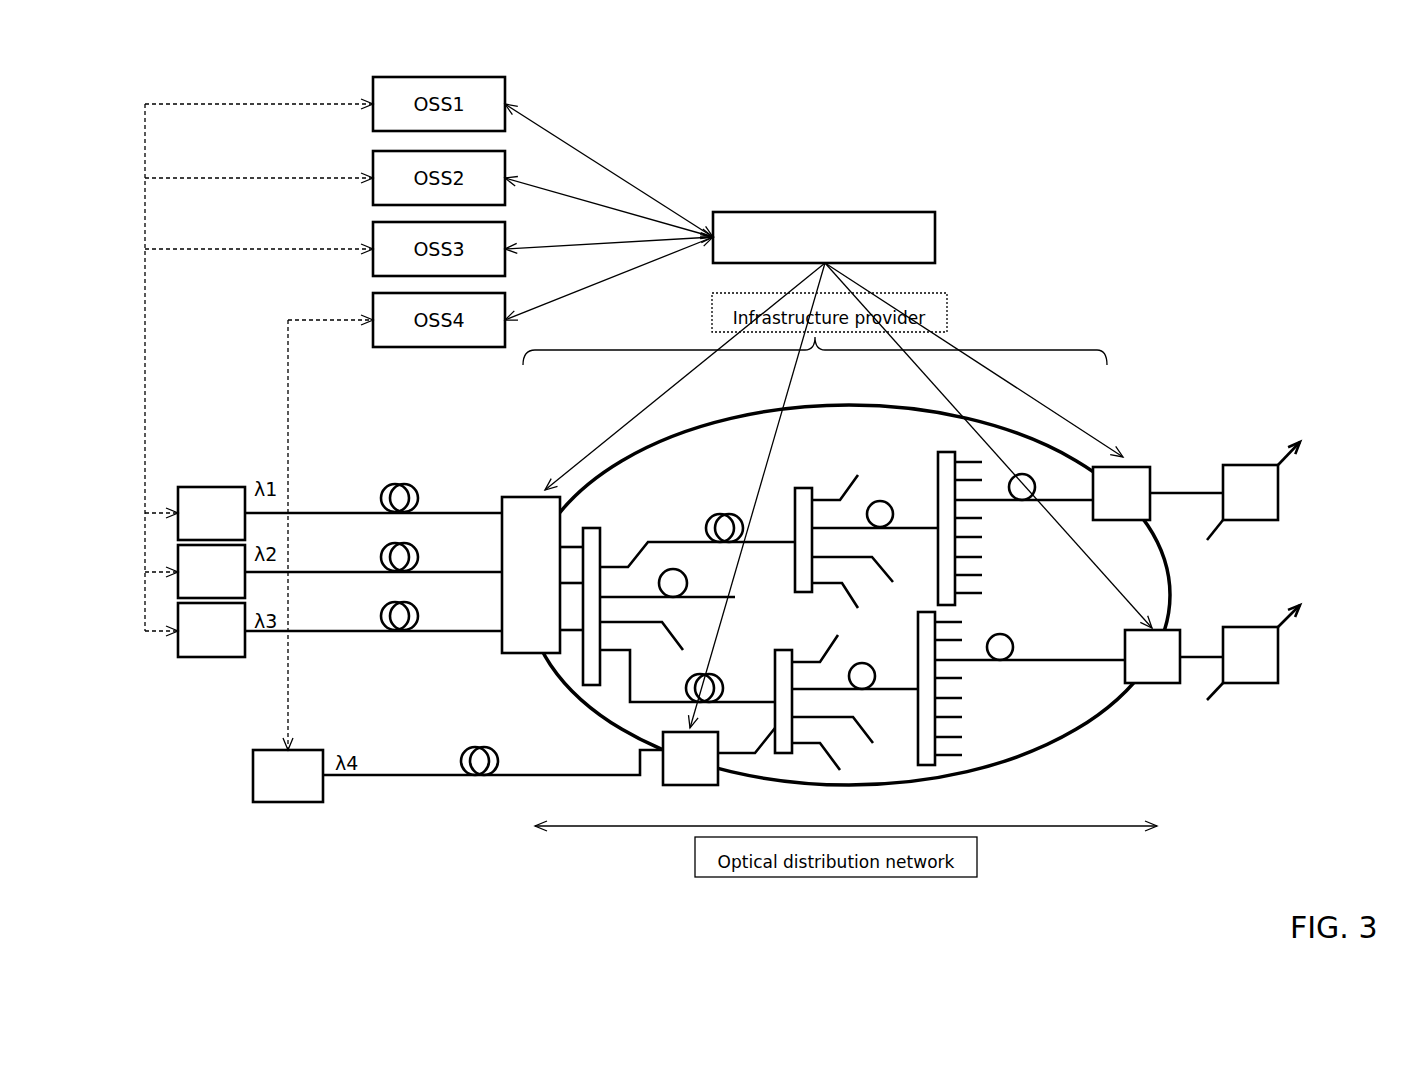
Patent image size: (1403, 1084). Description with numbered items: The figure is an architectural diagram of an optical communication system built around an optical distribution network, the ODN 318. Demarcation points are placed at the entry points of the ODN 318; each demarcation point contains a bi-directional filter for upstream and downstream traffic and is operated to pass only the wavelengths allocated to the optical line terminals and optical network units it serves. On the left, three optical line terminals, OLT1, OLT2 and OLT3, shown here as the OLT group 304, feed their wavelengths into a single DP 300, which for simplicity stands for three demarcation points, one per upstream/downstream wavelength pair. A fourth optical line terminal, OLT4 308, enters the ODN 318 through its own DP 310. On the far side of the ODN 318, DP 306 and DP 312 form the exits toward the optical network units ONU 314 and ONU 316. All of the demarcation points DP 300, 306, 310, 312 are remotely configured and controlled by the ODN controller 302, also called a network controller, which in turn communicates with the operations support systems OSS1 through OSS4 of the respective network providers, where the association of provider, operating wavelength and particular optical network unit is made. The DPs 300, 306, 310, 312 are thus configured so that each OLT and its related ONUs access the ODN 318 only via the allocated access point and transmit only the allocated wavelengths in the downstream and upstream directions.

The demarcation point 300 is at (510, 497).
The ODN controller 302 is at (830, 212).
The optical line terminals (OLT1-OLT3) 304 is at (190, 487).
The demarcation point 306 is at (1145, 467).
The optical line terminal (OLT4) 308 is at (295, 803).
The demarcation point 310 is at (663, 785).
The demarcation point 312 is at (1185, 630).
The optical network unit (ONU) 314 is at (1232, 465).
The optical network unit (ONU) 316 is at (1248, 627).
The ODN 318 is at (1088, 722).